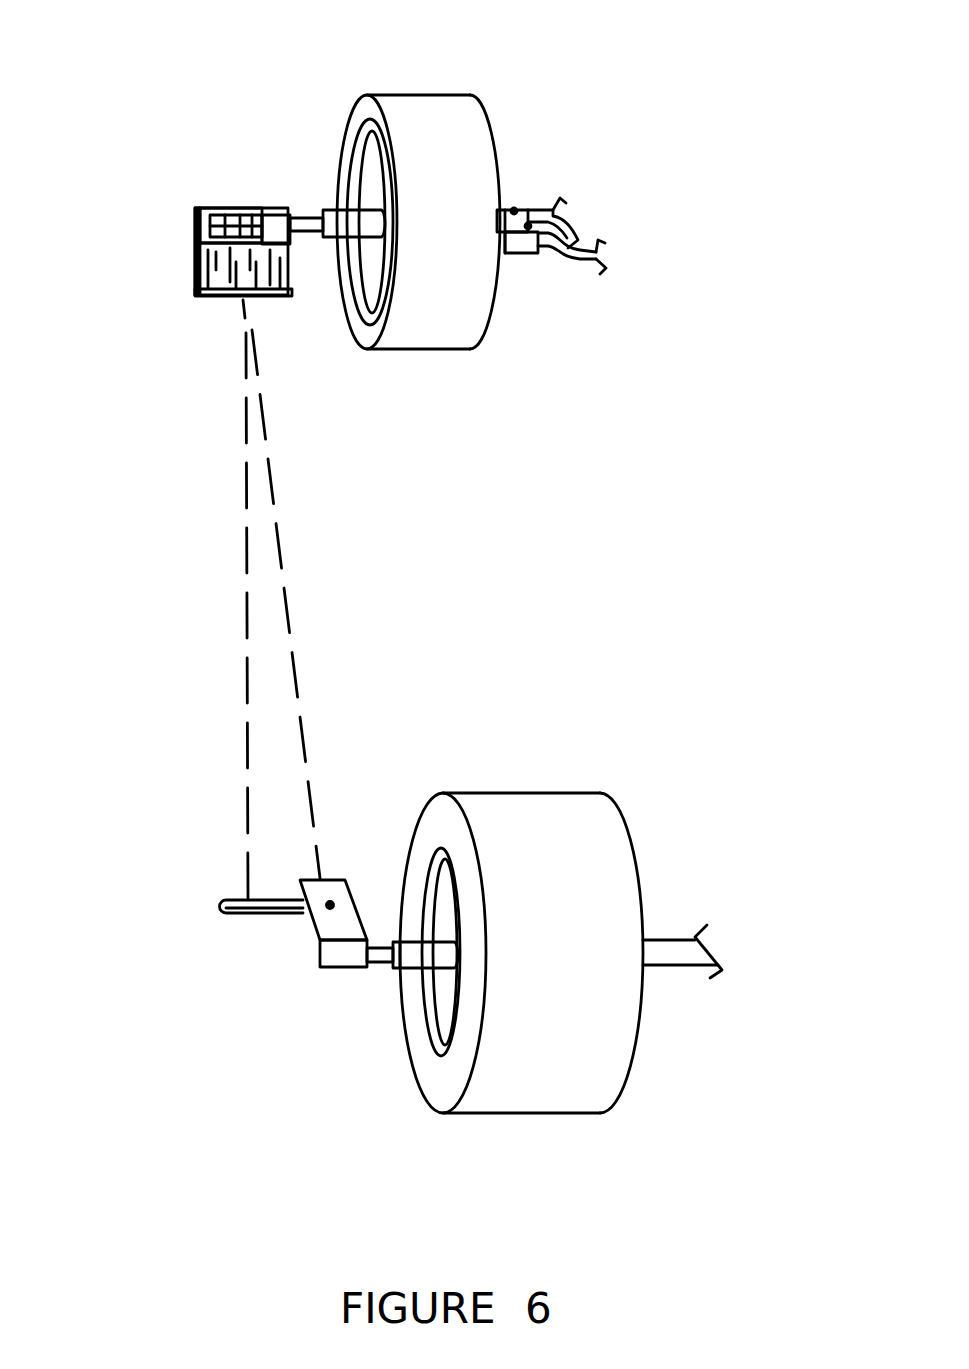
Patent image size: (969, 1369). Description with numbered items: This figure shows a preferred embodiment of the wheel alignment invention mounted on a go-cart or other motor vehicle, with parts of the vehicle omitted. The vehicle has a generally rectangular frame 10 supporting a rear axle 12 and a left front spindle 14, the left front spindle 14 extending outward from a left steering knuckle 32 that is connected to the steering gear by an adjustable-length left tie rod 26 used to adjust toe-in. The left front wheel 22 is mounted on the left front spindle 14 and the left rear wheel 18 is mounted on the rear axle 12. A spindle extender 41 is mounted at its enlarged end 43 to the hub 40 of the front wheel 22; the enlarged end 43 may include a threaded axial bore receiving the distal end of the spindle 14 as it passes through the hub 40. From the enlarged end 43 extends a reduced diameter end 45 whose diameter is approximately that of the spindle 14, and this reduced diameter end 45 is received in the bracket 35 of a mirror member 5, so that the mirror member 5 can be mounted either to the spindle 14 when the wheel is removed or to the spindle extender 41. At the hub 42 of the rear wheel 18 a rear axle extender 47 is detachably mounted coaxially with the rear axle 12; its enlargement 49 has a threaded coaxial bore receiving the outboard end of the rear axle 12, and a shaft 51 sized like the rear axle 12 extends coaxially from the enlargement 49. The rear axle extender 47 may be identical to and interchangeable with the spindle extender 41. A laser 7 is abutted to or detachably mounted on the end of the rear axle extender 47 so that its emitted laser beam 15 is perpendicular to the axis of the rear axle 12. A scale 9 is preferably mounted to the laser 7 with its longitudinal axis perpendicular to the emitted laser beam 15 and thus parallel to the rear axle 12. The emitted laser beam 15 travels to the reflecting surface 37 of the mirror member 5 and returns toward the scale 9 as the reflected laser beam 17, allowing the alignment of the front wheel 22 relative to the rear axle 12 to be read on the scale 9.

The mirror member 5 is at (193, 270).
The laser 7 is at (308, 928).
The scale 9 is at (220, 895).
The frame 10 is at (560, 222).
The rear axle 12 is at (678, 955).
The left front spindle 14 is at (500, 210).
The emitted laser beam 15 is at (298, 670).
The reflected laser beam 17 is at (247, 685).
The left rear wheel 18 is at (542, 1088).
The left front wheel 22 is at (430, 327).
The left tie rod 26 is at (587, 260).
The left steering knuckle 32 is at (520, 210).
The bracket 35 is at (270, 212).
The reflecting surface 37 is at (218, 280).
The hub 40 is at (372, 225).
The spindle extender 41 is at (306, 216).
The hub 42 is at (447, 953).
The enlarged end 43 is at (327, 214).
The reduced diameter end 45 is at (230, 212).
The rear axle extender 47 is at (410, 955).
The enlargement 49 is at (395, 945).
The shaft 51 is at (377, 953).